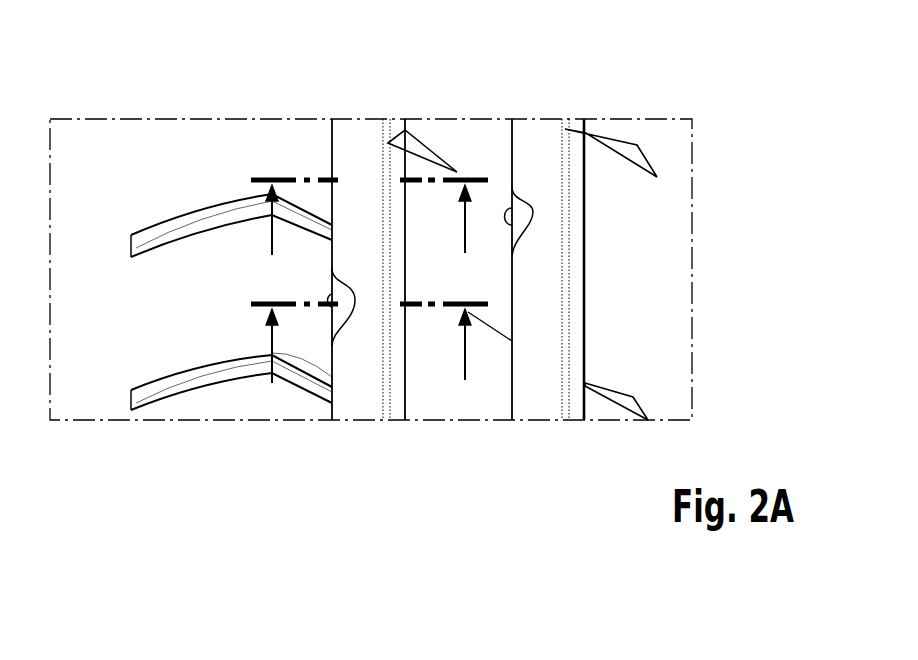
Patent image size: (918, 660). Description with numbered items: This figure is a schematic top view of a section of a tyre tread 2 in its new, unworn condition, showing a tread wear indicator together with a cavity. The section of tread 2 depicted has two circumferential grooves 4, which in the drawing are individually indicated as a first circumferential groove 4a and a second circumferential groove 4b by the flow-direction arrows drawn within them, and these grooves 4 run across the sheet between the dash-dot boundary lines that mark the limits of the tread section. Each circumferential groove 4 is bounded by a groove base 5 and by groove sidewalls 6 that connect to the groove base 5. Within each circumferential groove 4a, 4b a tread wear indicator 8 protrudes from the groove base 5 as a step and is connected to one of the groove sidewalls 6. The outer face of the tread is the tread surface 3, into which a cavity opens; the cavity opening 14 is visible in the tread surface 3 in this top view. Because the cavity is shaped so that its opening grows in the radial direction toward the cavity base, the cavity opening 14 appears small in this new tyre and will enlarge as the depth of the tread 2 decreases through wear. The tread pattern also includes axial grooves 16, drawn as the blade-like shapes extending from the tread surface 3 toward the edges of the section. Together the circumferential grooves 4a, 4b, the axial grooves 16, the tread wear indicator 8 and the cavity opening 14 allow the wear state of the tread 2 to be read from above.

The tread 2 is at (549, 96).
The tread surface 3 is at (178, 144).
The circumferential groove 4 is at (338, 119).
The first flow passage 4a is at (381, 361).
The second flow passage 4b is at (369, 235).
The groove base 5 is at (352, 128).
The groove sidewall 6 is at (388, 128).
The tread wear indicator 8 is at (348, 309).
The cavity opening 14 is at (331, 298).
The axial groove 16 is at (140, 236).